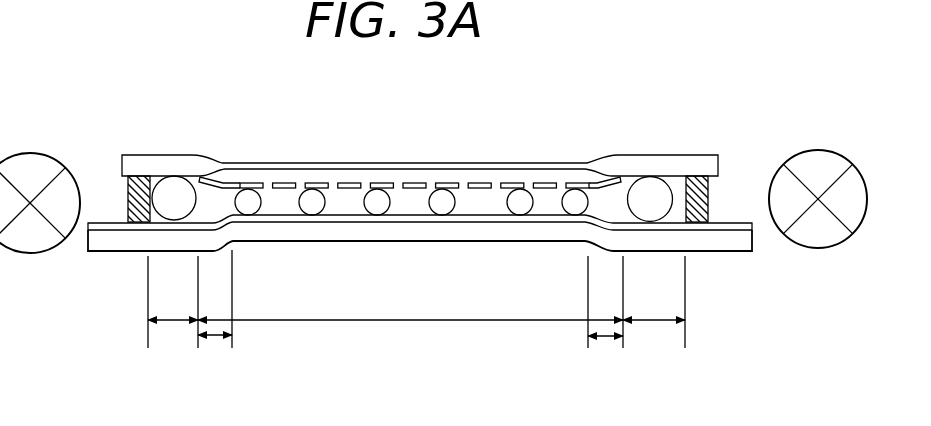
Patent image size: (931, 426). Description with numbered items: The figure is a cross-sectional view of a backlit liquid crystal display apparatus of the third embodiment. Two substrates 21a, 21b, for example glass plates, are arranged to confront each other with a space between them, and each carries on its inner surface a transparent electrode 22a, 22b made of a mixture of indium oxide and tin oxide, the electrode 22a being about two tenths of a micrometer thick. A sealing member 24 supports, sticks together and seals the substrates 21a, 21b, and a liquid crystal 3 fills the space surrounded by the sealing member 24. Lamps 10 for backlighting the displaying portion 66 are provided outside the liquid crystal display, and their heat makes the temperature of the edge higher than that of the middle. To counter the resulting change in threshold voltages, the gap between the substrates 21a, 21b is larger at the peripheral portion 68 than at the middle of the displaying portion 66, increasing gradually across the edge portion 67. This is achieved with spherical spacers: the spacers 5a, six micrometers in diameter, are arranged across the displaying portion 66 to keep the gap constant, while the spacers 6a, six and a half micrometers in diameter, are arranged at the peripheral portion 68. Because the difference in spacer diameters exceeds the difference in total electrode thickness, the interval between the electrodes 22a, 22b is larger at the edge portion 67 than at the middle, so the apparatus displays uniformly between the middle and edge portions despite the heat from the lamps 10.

The lamps 10 is at (68, 187).
The sealing member 24 is at (128, 205).
The substrate 21b is at (693, 165).
The substrate 21a is at (727, 243).
The transparent electrode 22b is at (473, 185).
The transparent electrode 22a is at (753, 225).
The spacers 5a is at (377, 195).
The spacers 6a is at (645, 188).
The liquid crystal 3 is at (472, 206).
The displaying portion 66 is at (367, 322).
The edge portion 67 is at (218, 338).
The peripheral portion 68 is at (182, 322).